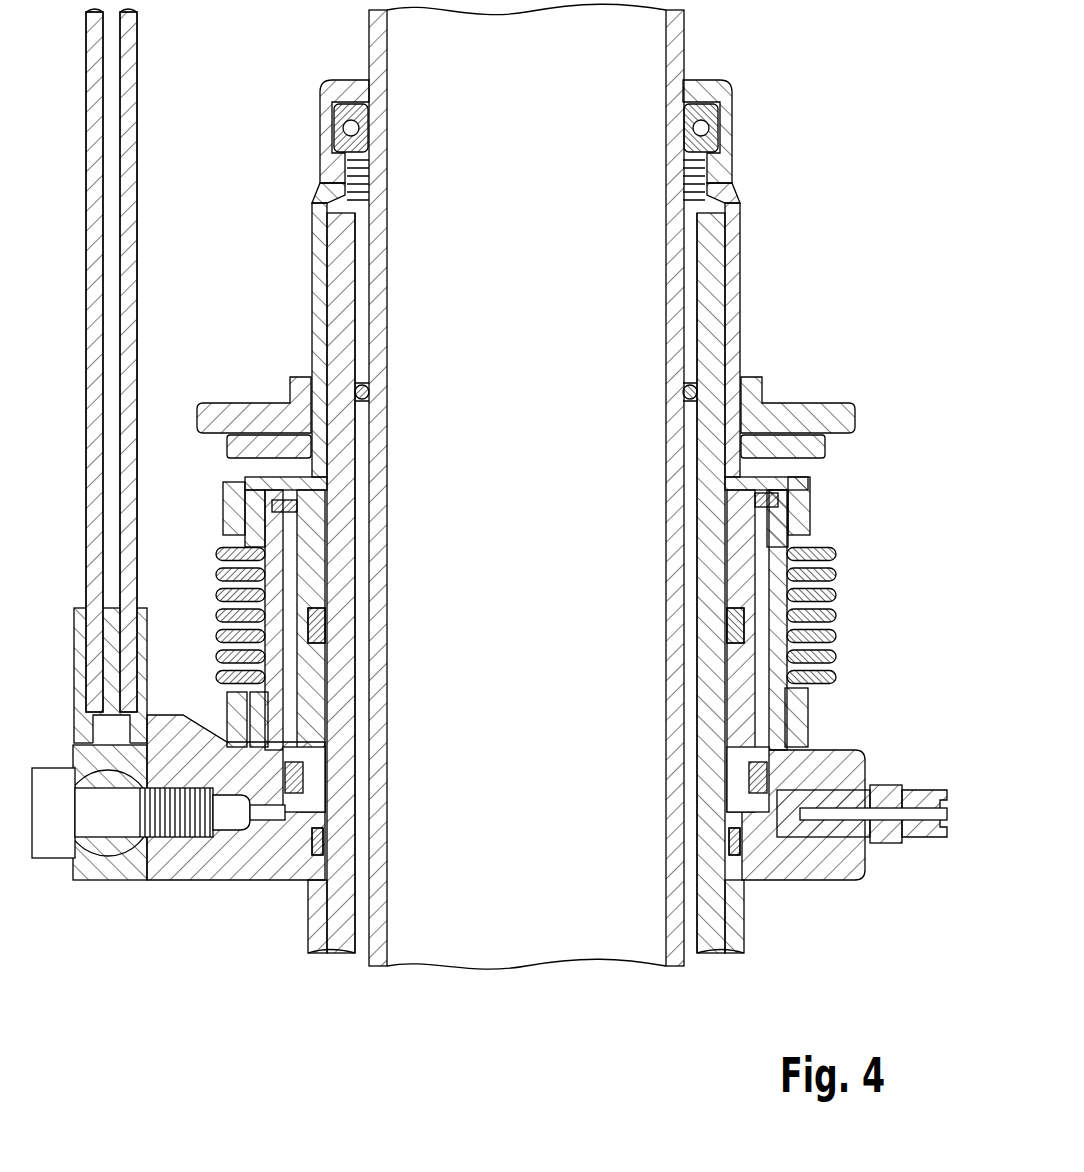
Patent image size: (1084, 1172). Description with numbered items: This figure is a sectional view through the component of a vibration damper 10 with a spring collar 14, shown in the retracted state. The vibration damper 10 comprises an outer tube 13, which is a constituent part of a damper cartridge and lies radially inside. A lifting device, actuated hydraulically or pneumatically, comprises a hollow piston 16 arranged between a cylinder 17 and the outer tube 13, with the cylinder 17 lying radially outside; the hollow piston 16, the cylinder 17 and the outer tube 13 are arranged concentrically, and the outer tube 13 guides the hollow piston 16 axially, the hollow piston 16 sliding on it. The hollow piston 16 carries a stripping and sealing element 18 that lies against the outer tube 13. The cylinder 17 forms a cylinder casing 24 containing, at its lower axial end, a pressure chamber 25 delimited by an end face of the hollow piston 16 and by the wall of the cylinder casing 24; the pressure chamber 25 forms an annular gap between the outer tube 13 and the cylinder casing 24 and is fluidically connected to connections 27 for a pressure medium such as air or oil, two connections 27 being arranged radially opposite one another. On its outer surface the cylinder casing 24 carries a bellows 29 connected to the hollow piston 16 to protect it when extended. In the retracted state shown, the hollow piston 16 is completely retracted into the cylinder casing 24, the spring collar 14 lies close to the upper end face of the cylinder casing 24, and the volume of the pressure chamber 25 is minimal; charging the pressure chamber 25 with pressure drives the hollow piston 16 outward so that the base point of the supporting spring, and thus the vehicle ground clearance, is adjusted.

The vibration damper 10 is at (684, 46).
The outer tube 13 is at (722, 268).
The spring collar 14 is at (855, 413).
The hollow piston 16 is at (742, 233).
The cylinder 17 is at (778, 660).
The stripping and sealing element 18 is at (700, 128).
The cylinder casing 24 is at (805, 522).
The pressure chamber 25 is at (290, 808).
The connection 27 is at (238, 818).
The bellows 29 is at (838, 577).